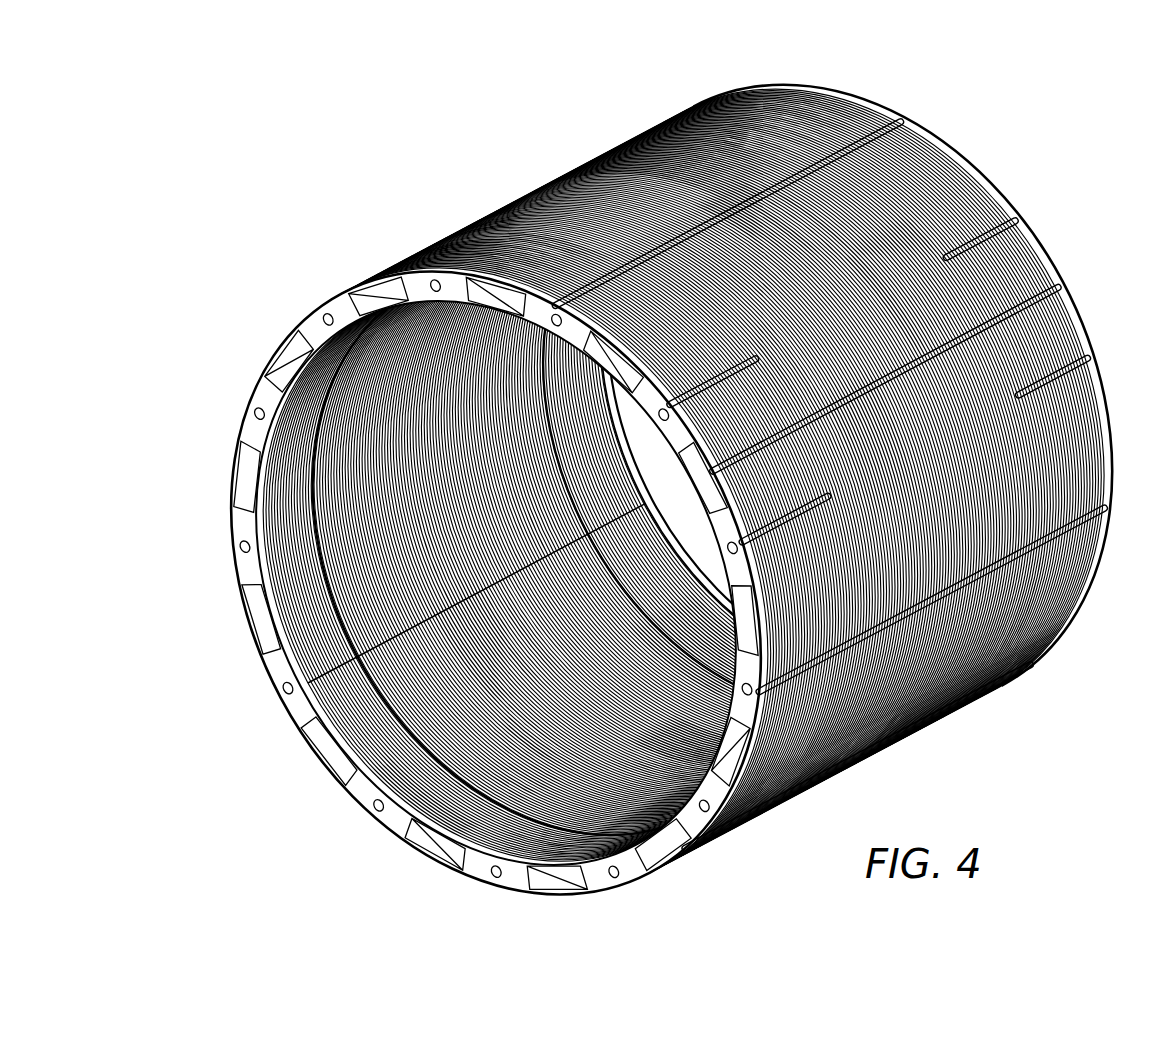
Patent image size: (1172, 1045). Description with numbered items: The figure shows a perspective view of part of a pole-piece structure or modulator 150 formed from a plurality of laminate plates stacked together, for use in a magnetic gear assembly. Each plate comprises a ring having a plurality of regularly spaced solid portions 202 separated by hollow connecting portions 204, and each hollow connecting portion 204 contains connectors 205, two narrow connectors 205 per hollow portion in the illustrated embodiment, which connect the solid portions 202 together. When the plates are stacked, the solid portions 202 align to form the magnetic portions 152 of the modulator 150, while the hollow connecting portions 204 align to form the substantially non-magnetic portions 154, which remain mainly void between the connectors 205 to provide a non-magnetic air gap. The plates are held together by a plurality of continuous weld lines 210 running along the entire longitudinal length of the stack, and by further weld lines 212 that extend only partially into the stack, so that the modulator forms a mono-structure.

The pole-piece structure or modulator 150 is at (379, 199).
The magnetic portions 152 is at (244, 425).
The substantially non-magnetic portions 154 is at (228, 492).
The solid portions 202 is at (246, 402).
The hollow connecting portions 204 is at (237, 470).
The connectors 205 is at (313, 758).
The continuous weld lines 210 is at (888, 126).
The further weld lines 212 is at (1014, 217).